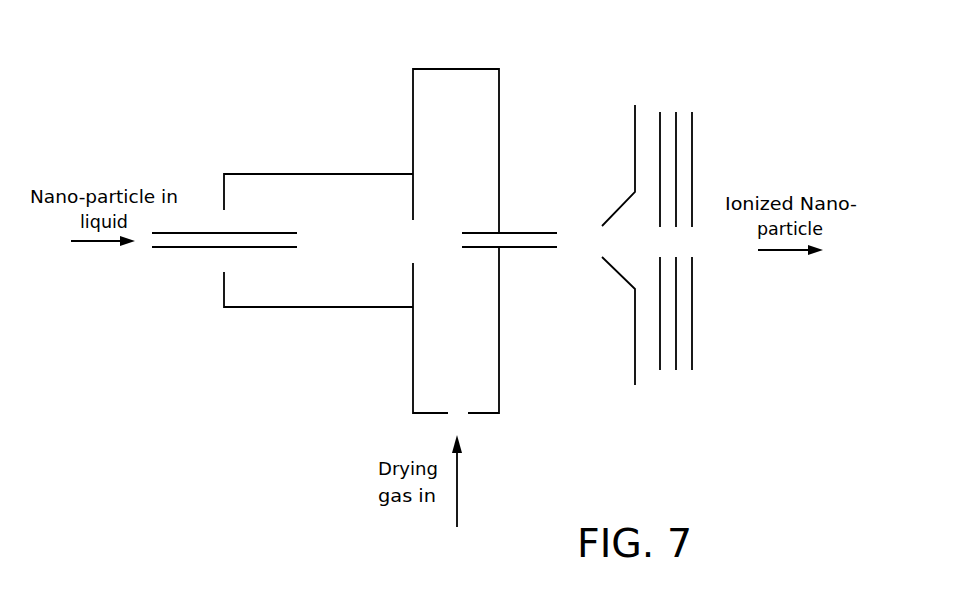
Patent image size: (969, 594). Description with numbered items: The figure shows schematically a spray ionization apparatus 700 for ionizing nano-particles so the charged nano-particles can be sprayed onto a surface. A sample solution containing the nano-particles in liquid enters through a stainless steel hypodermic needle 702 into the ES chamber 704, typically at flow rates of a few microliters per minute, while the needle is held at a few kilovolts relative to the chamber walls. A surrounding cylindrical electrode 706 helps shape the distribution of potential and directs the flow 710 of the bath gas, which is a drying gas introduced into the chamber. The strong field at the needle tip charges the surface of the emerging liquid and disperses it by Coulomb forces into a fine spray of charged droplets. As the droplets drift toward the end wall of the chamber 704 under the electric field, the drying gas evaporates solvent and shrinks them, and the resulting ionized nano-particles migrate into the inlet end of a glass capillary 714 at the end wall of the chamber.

The apparatus 700 is at (216, 51).
The stainless steel hypodermic needle 702 is at (185, 248).
The ES chamber 704 is at (362, 288).
The cylindrical electrode 706 is at (290, 174).
The flow of the bath gas 710 is at (457, 496).
The glass capillary 714 is at (520, 233).